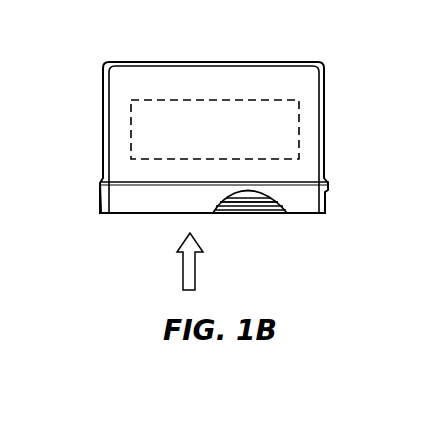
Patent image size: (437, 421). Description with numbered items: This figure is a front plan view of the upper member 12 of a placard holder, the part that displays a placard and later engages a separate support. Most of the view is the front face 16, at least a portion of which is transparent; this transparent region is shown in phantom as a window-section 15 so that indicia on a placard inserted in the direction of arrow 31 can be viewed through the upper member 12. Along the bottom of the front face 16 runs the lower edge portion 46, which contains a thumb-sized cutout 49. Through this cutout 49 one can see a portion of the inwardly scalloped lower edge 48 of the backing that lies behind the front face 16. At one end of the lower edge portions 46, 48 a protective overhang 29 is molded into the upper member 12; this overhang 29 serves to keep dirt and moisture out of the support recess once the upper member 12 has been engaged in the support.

The upper member 12 is at (342, 70).
The window-section 15 is at (160, 101).
The front face 16 is at (262, 93).
The protective overhang 29 is at (101, 203).
The arrow 31 is at (183, 270).
The lower edge portion 46 is at (150, 200).
The scalloped lower edge 48 is at (233, 204).
The thumb-sized cutout 49 is at (262, 205).